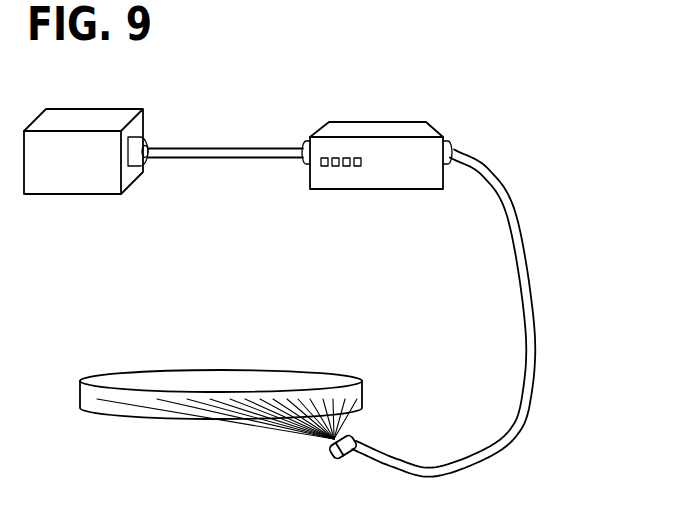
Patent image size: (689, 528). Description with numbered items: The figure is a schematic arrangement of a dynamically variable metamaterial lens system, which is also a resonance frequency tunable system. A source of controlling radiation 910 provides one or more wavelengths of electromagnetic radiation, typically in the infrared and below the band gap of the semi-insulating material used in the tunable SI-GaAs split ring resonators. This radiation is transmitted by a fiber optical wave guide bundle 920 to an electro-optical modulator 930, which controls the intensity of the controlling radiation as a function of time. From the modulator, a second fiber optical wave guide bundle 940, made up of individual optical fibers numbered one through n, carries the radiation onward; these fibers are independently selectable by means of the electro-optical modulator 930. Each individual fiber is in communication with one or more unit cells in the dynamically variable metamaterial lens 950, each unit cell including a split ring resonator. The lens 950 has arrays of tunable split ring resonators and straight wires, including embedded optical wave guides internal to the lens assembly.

The source of controlling radiation 910 is at (94, 109).
The fiber optical wave guide bundle 920 is at (218, 148).
The electro-optical modulator 930 is at (432, 127).
The fiber optical wave guide bundle 940 is at (537, 325).
The dynamically variable metamaterial lens 950 is at (133, 372).